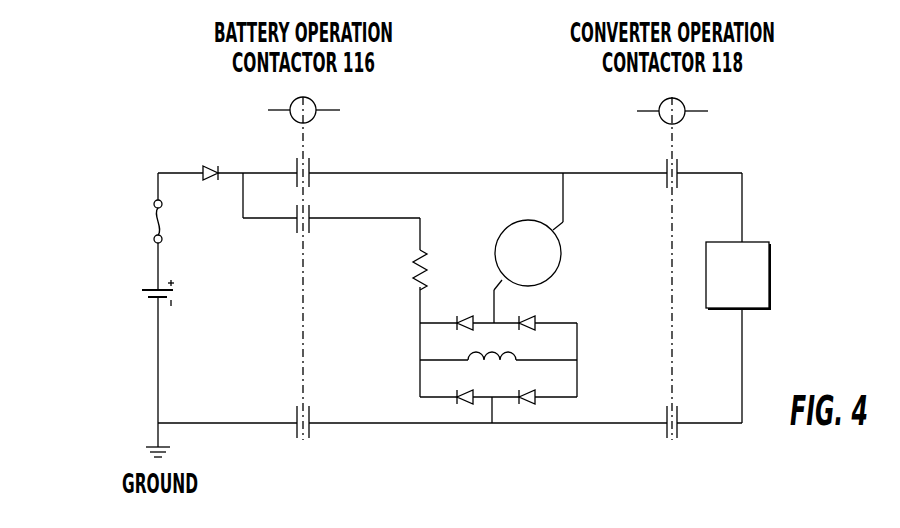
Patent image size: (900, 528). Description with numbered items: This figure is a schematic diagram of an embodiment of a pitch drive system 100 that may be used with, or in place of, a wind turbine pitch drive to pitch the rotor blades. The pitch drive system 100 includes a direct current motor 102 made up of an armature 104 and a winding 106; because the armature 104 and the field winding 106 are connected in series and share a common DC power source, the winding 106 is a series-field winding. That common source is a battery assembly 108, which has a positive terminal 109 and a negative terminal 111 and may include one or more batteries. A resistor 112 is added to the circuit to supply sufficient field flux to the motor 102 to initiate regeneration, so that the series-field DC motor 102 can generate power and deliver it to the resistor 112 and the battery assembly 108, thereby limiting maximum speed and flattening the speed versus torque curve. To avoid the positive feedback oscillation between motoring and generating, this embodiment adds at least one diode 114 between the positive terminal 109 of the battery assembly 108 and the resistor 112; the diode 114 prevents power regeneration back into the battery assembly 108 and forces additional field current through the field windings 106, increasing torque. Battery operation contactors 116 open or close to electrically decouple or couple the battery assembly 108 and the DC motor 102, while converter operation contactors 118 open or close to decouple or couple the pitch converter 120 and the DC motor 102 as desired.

The pitch drive system 100 is at (112, 163).
The direct current (DC) motor 102 is at (458, 237).
The armature 104 is at (562, 258).
The winding 106 is at (495, 360).
The battery assembly 108 is at (142, 293).
The positive terminal 109 is at (173, 291).
The negative terminal 111 is at (167, 303).
The resistor 112 is at (412, 263).
The diode 114 is at (212, 163).
The battery operation contactor 116 is at (304, 268).
The converter operation contactor 118 is at (672, 268).
The pitch converter 120 is at (755, 288).